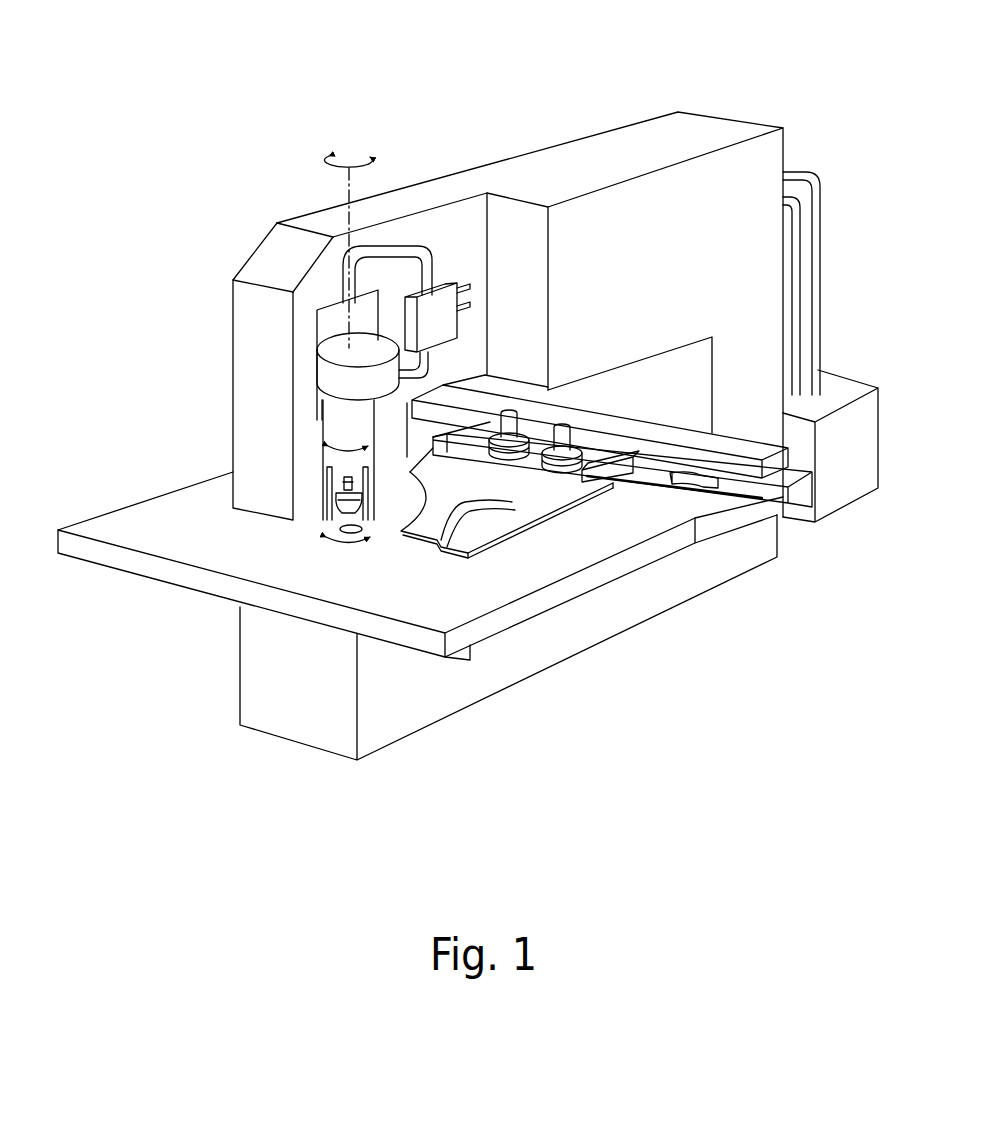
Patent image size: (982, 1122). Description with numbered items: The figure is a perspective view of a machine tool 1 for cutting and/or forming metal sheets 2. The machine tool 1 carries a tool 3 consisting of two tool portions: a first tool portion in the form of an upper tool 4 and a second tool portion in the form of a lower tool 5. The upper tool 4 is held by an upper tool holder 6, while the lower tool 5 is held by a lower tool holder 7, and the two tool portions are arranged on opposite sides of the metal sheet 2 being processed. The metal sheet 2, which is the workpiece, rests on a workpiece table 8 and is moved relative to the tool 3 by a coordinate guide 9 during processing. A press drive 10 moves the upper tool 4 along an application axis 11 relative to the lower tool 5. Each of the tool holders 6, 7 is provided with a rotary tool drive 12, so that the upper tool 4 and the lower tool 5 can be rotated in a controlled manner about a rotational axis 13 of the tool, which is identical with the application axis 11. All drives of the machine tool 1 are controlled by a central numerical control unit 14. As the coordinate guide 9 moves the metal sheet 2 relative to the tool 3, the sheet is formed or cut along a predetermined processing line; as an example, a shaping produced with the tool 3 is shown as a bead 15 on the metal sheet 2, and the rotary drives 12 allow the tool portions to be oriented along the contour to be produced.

The machine tool 1 is at (582, 101).
The metal sheet 2 is at (590, 500).
The tool 3 is at (308, 525).
The upper tool 4 is at (327, 497).
The lower tool 5 is at (338, 528).
The upper tool holder 6 is at (331, 487).
The lower tool holder 7 is at (378, 533).
The workpiece table 8 is at (522, 577).
The coordinate guide 9 is at (804, 493).
The press drive 10 is at (332, 350).
The application axis 11 is at (345, 180).
The rotary tool drive 12 is at (342, 449).
The rotational axis 13 is at (297, 252).
The central numerical control unit 14 is at (849, 468).
The bead 15 is at (463, 512).